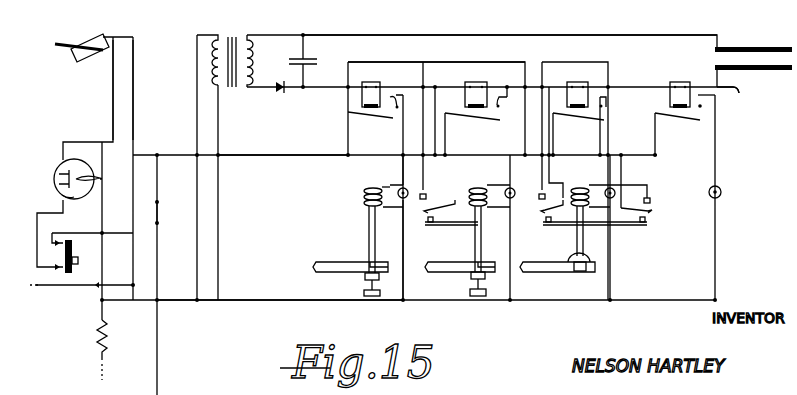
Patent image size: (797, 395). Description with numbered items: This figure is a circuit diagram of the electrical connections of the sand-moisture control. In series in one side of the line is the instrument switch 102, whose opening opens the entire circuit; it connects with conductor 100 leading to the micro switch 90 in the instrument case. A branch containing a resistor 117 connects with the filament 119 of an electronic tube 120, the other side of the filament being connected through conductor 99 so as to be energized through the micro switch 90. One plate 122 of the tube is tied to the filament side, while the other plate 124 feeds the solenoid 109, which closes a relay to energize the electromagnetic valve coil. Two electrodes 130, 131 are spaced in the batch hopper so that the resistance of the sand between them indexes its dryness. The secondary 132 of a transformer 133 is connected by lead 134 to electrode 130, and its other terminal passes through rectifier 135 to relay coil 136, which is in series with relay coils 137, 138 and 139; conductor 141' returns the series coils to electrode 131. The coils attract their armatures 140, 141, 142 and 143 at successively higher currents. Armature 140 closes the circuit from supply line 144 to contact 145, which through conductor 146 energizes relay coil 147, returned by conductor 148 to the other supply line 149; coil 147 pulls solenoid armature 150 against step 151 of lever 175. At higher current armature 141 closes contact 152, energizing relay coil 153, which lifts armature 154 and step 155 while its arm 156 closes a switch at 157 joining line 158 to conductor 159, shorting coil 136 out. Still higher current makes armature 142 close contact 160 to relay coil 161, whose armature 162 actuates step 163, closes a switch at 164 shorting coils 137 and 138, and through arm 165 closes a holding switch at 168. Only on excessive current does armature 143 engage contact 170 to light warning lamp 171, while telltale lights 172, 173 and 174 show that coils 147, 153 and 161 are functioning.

The micro switch 90 is at (93, 33).
The conductor 99 is at (113, 80).
The conductor 100 is at (133, 62).
The instrument switch 102 is at (157, 206).
The solenoid 109 is at (80, 261).
The resistor 117 is at (107, 347).
The filament 119 is at (102, 180).
The electronic tube 120 is at (72, 160).
The plate 122 is at (57, 174).
The plate 124 is at (62, 195).
The electrode 130 is at (771, 44).
The electrode 131 is at (755, 70).
The secondary 132 is at (248, 52).
The transformer 133 is at (233, 33).
The lead 134 is at (660, 29).
The rectifier 135 is at (282, 96).
The relay coil 136 is at (362, 96).
The relay coil 137 is at (465, 96).
The relay coil 138 is at (567, 96).
The relay coil 139 is at (690, 66).
The armature 140 is at (375, 121).
The armature 141 is at (472, 125).
The conductor 141' is at (738, 96).
The armature 142 is at (582, 122).
The armature 143 is at (688, 122).
The supply line 144 is at (320, 171).
The contact 145 is at (392, 96).
The conductor 146 is at (403, 166).
The relay coil 147 is at (363, 194).
The conductor 148 is at (403, 283).
The supply line 149 is at (283, 306).
The solenoid armature 150 is at (368, 223).
The step 151 is at (366, 280).
The contact 152 is at (506, 95).
The relay coil 153 is at (469, 188).
The armature 154 is at (475, 243).
The step 155 is at (486, 279).
The arm 156 is at (432, 226).
The switch 157 is at (448, 179).
The line 158 is at (358, 62).
The conductor 159 is at (441, 62).
The contact 160 is at (606, 103).
The relay coil 161 is at (577, 188).
The armature 162 is at (577, 242).
The step 163 is at (578, 272).
The switch 164 is at (552, 182).
The arm 165 is at (634, 226).
The switch 168 is at (652, 211).
The contact 170 is at (702, 107).
The warning lamp 171 is at (722, 192).
The telltale light 172 is at (398, 189).
The telltale light 173 is at (508, 199).
The telltale light 174 is at (608, 199).
The lever 175 is at (317, 270).